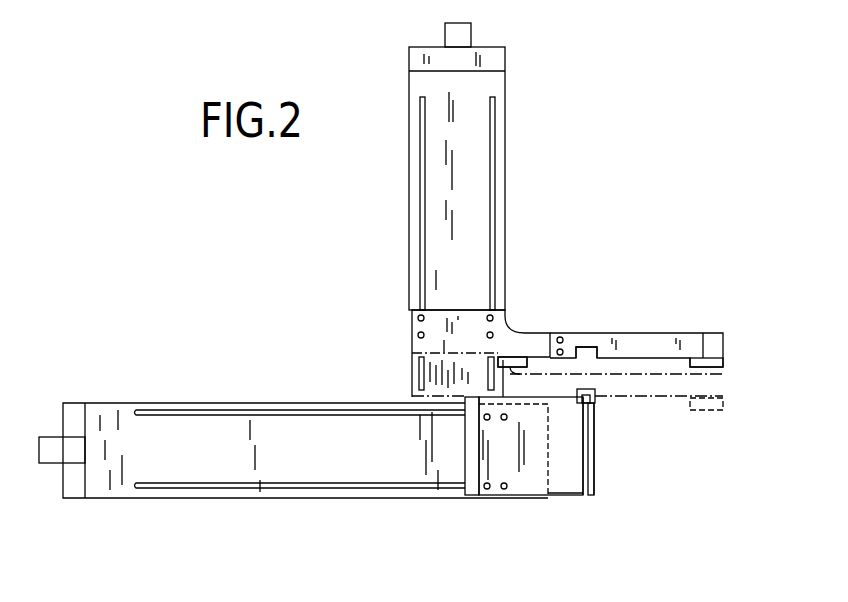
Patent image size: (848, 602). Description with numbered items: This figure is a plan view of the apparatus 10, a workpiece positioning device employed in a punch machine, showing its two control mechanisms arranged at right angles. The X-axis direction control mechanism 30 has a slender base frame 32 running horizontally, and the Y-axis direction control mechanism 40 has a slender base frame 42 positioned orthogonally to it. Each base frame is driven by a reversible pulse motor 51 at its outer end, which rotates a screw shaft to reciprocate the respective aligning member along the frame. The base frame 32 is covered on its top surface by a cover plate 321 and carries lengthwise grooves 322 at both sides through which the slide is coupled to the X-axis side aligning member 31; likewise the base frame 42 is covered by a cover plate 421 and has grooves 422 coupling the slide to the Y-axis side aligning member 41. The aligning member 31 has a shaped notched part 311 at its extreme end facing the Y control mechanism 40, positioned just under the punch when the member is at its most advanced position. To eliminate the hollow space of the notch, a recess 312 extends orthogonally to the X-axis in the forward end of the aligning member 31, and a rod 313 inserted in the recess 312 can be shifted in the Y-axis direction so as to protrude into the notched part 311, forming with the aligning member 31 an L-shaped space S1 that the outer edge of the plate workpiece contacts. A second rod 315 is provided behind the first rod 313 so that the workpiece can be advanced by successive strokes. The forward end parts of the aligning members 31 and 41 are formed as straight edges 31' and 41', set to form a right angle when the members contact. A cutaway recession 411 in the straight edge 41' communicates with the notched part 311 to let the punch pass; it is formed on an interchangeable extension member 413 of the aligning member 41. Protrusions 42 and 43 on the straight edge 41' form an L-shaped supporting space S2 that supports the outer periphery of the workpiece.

The apparatus 10 is at (371, 368).
The X-axis direction control mechanism 30 is at (217, 403).
The X-axis side aligning member 31 is at (531, 477).
The straight edge 31' is at (625, 446).
The notched part 311 is at (590, 400).
The recess 312 is at (582, 478).
The rod 313 is at (590, 465).
The second rod 315 is at (478, 460).
The base frame 32 is at (317, 402).
The cover plate 321 is at (290, 472).
The grooves 322 is at (158, 410).
The Y-axis direction control mechanism 40 is at (409, 152).
The Y-axis side aligning member 41 is at (453, 351).
The straight edge 41' is at (577, 412).
The cutaway recession 411 is at (587, 349).
The extension member 413 is at (643, 340).
The base frame / protrusion 42 is at (409, 208).
The cover plate 421 is at (478, 192).
The grooves 422 is at (423, 107).
The protrusion 43 is at (519, 363).
The reversible pulse motor 51 is at (463, 30).
The L-shaped space S1 is at (594, 420).
The supporting space S2 is at (713, 374).